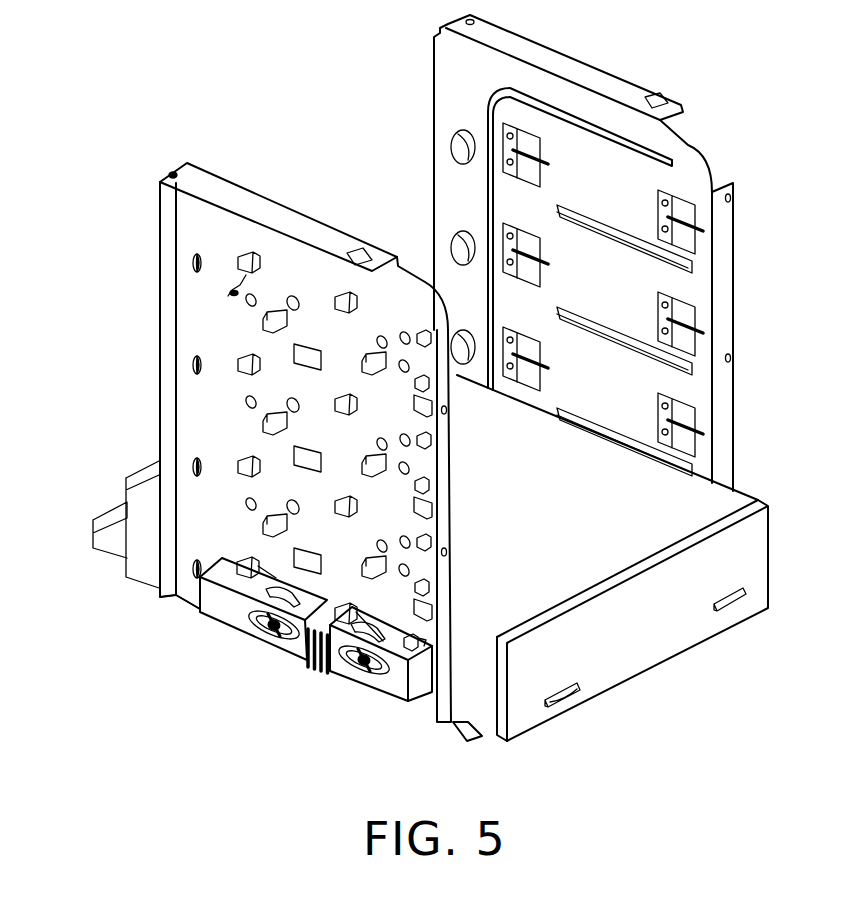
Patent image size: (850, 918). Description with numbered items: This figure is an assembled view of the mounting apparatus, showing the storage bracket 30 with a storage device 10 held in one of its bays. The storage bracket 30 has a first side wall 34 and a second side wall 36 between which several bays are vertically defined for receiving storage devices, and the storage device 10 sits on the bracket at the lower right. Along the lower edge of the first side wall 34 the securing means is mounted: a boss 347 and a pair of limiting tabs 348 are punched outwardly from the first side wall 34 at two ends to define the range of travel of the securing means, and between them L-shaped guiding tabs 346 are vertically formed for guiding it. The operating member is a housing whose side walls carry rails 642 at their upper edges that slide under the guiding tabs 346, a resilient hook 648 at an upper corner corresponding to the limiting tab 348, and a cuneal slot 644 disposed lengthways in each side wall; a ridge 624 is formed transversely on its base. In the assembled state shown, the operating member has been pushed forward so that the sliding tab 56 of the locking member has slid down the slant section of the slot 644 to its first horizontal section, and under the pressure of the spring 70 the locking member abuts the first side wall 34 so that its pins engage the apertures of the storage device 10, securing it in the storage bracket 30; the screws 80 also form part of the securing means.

The storage device 10 is at (745, 573).
The storage bracket 30 is at (738, 264).
The first side wall 34 is at (200, 418).
The second side wall 36 is at (703, 388).
The sliding tab 56 is at (352, 645).
The spring 70 is at (283, 632).
The screw 80 is at (273, 620).
The guiding tab 346 is at (176, 593).
The boss 347 is at (197, 570).
The limiting tab 348 is at (417, 633).
The ridge 624 is at (302, 662).
The rail 642 is at (250, 585).
The cuneal slot 644 is at (380, 645).
The resilient hook 648 is at (413, 647).